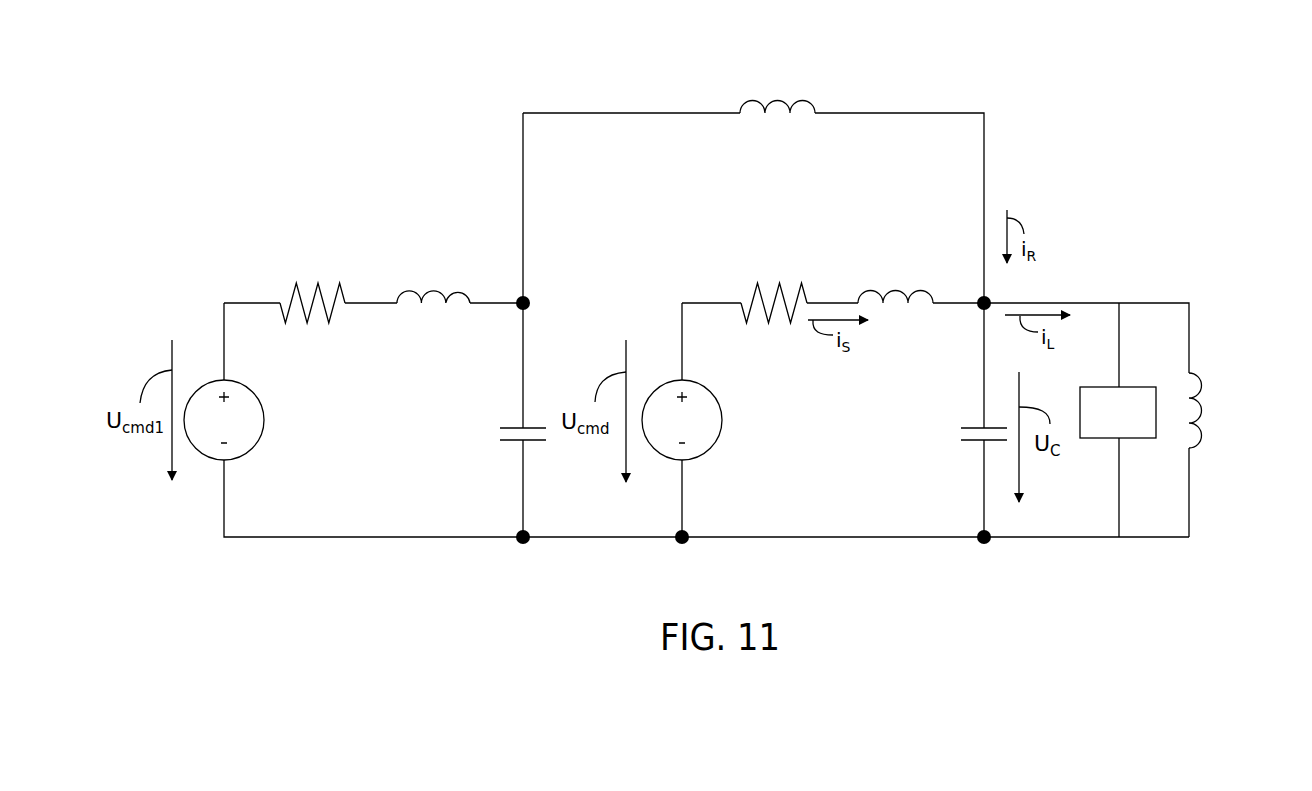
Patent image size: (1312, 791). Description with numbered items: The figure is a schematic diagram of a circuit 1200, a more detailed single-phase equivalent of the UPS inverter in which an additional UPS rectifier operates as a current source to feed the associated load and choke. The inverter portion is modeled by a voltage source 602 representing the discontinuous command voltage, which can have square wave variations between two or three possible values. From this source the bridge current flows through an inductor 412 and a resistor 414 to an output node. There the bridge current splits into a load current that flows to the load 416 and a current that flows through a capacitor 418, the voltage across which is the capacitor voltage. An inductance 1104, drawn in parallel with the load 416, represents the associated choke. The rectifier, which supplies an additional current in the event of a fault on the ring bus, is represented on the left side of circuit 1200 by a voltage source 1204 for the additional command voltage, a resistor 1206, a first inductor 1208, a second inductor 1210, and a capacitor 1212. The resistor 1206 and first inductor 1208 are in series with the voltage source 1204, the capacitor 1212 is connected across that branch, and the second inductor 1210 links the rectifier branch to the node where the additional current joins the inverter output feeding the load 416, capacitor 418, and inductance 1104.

The circuit 1200 is at (1156, 105).
The voltage source 1204 is at (264, 420).
The resistor 1206 is at (300, 283).
The first inductor 1208 is at (432, 288).
The second inductor 1210 is at (777, 98).
The capacitor 1212 is at (508, 428).
The voltage source 602 is at (722, 420).
The resistor 414 is at (780, 283).
The inductor 412 is at (895, 288).
The capacitor 418 is at (970, 428).
The load 416 is at (1134, 387).
The inductance 1104 is at (1207, 372).